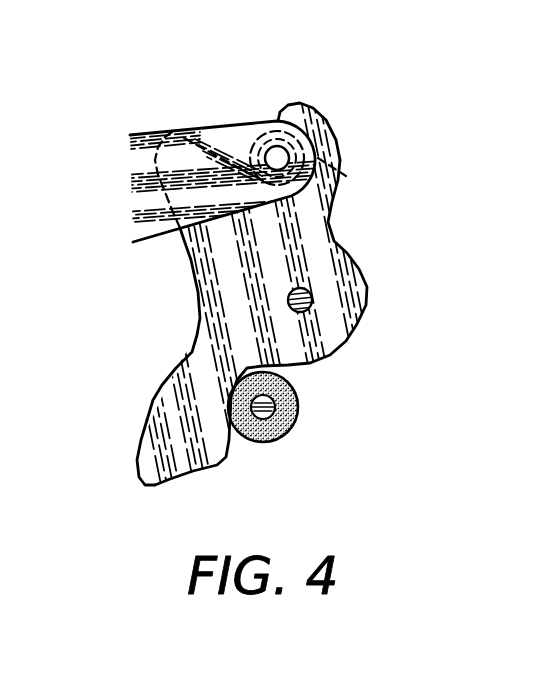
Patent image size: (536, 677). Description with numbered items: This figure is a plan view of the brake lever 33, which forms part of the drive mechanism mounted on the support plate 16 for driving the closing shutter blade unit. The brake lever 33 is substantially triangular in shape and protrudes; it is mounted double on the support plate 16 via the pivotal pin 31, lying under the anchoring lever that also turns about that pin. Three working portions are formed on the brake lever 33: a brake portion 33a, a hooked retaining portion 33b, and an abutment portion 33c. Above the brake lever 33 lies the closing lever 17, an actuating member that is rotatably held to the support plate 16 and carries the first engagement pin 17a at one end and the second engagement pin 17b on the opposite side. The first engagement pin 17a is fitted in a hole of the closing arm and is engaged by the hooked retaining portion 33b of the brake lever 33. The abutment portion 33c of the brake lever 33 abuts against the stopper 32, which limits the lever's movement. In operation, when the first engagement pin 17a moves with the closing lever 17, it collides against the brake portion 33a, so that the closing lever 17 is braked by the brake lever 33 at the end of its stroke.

The support plate 16 is at (417, 410).
The closing lever 17 is at (227, 131).
The first engagement pin 17a is at (346, 176).
The second engagement pin 17b is at (276, 146).
The pivotal pin 31 is at (311, 301).
The stopper 32 is at (299, 419).
The brake lever 33 is at (340, 262).
The brake portion 33a is at (175, 152).
The hooked retaining portion 33b is at (330, 133).
The abutment portion 33c is at (141, 447).